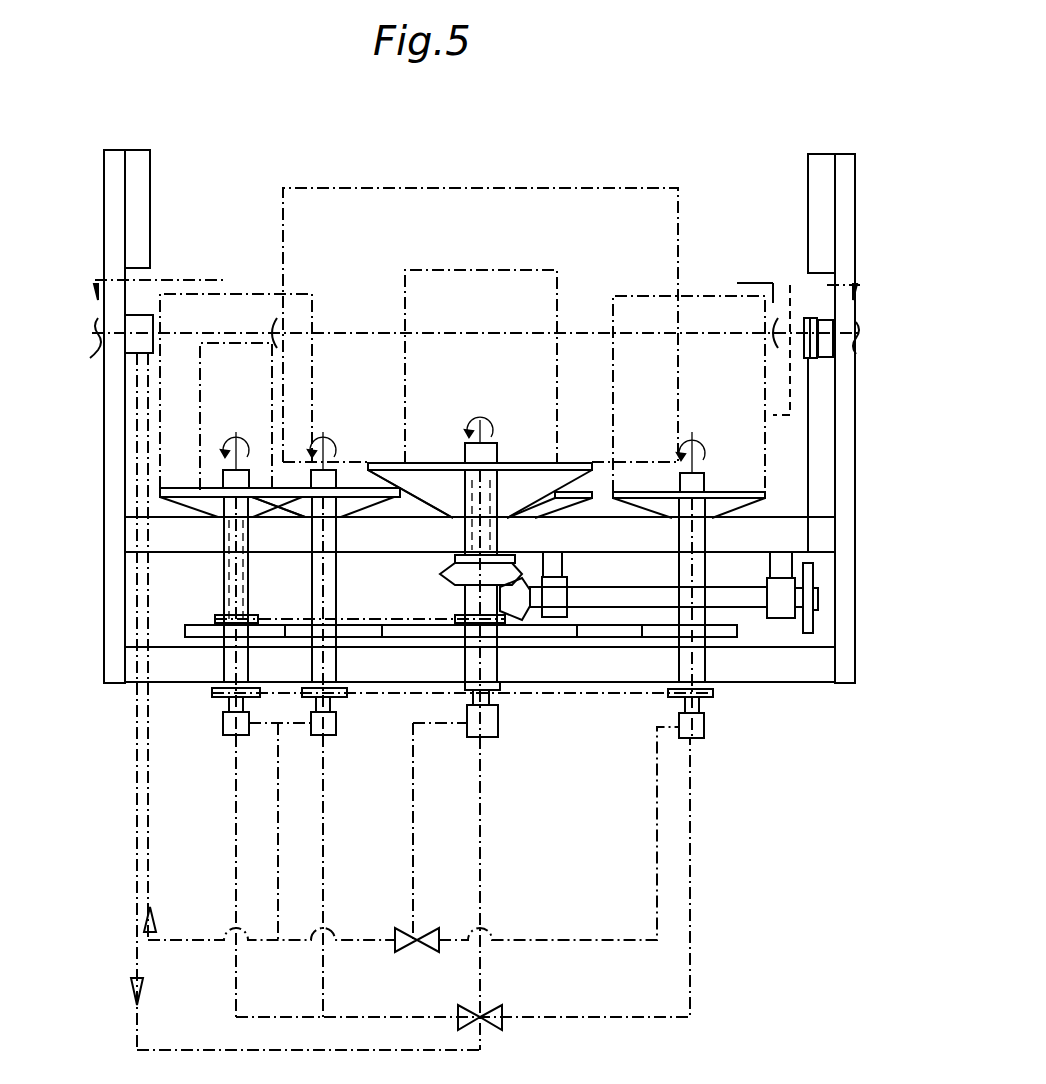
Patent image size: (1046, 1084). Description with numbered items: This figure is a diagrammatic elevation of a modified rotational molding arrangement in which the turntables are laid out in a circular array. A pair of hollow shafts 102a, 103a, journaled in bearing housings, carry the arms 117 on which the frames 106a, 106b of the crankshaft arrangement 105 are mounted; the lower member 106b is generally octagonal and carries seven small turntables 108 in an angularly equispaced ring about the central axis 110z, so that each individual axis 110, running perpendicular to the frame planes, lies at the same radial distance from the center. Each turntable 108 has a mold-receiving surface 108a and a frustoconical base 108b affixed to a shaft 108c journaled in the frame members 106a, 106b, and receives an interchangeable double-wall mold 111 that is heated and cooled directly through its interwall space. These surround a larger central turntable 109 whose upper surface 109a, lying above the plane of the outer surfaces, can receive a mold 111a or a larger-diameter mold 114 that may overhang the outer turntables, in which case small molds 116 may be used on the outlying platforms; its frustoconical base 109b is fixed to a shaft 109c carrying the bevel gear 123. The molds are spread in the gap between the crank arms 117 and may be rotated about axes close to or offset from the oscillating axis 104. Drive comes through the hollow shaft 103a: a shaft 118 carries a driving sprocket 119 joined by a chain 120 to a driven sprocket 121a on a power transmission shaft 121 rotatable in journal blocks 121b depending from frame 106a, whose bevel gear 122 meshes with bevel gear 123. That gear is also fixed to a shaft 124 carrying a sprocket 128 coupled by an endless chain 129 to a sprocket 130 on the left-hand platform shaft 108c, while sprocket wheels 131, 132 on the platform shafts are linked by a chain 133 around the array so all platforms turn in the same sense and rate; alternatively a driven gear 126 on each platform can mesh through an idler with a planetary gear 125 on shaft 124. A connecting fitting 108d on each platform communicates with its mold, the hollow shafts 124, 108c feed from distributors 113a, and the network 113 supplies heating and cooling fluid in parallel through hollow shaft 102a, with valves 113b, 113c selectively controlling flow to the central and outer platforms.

The hollow shaft 102a is at (101, 353).
The hollow shaft 103a is at (869, 352).
The oscillating axis 104 is at (346, 333).
The crankshaft arrangement 105 is at (765, 696).
The frame member 106a is at (836, 540).
The frame member 106b is at (810, 670).
The turntable 108 is at (200, 503).
The mold-receiving surface 108a is at (160, 487).
The frustoconical base 108b is at (258, 510).
The shaft 108c is at (228, 580).
The connecting fitting 108d is at (248, 470).
The central turntable 109 is at (556, 484).
The upper surface 109a is at (382, 465).
The frustoconical base 109b is at (407, 494).
The shaft 109c is at (525, 542).
The axis 110 is at (237, 580).
The central axis 110z is at (483, 826).
The double-wall mold 111 is at (462, 393).
The mold 111a is at (481, 366).
The network 113 is at (150, 820).
The distributor 113a is at (328, 758).
The valve 113b is at (422, 957).
The valve 113c is at (500, 1030).
The larger-diameter mold 114 is at (480, 325).
The small mold 116 is at (236, 416).
The arm 117 is at (113, 462).
The shaft 118 is at (816, 320).
The driving sprocket 119 is at (808, 325).
The chain 120 is at (808, 452).
The power transmission shaft 121 is at (618, 597).
The driven sprocket 121a is at (815, 627).
The journal block 121b is at (563, 596).
The bevel gear 122 is at (527, 612).
The bevel gear 123 is at (472, 598).
The shaft 124 is at (494, 627).
The planetary gear 125 is at (517, 622).
The driven gear 126 is at (192, 632).
The sprocket 128 is at (498, 622).
The endless chain 129 is at (378, 616).
The sprocket 130 is at (257, 623).
The sprocket wheel 131 is at (222, 698).
The sprocket wheel 132 is at (337, 736).
The chain 133 is at (612, 696).